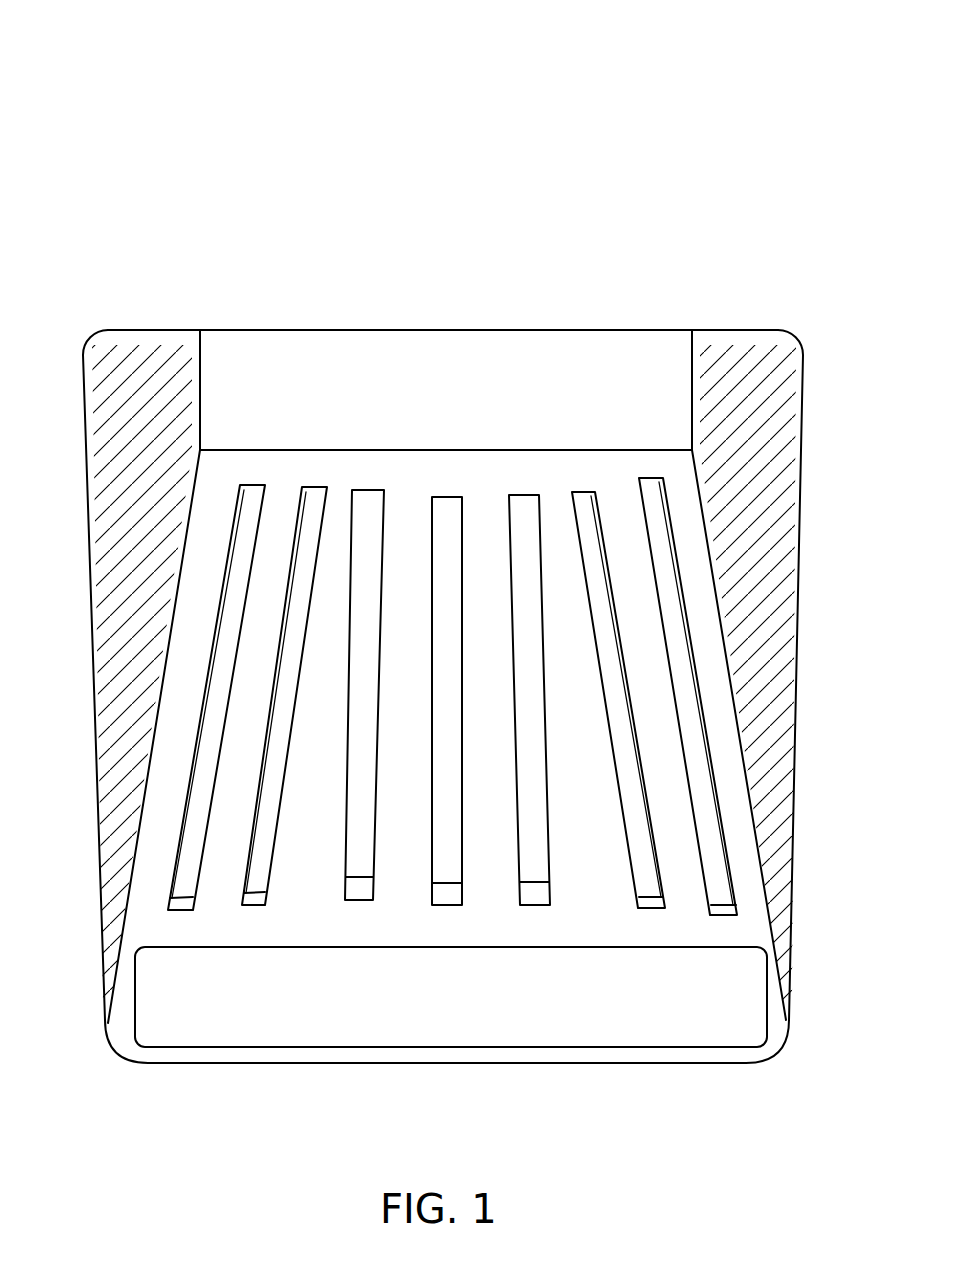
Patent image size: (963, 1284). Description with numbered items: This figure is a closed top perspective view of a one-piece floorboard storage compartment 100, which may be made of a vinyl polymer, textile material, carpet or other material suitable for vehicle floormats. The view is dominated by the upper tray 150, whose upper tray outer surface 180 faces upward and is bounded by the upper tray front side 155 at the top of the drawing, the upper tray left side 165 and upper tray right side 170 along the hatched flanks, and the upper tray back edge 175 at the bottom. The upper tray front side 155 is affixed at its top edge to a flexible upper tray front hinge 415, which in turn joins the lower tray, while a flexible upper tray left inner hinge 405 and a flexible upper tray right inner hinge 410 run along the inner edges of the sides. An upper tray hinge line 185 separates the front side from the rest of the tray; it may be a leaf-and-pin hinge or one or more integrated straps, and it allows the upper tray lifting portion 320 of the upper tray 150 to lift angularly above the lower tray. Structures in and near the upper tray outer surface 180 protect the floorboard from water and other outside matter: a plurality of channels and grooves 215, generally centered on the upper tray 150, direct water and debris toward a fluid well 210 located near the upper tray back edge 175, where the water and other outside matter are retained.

The one-piece floorboard storage compartment 100 is at (105, 50).
The flexible upper tray front hinge 415 is at (380, 328).
The upper tray right side 170 is at (751, 675).
The upper tray left side 165 is at (137, 682).
The upper tray back edge 175 is at (412, 1066).
The upper tray 150 is at (210, 505).
The upper tray front side 155 is at (563, 390).
The upper tray hinge line 185 is at (297, 450).
The flexible upper tray left inner hinge 405 is at (150, 735).
The flexible upper tray right inner hinge 410 is at (740, 726).
The upper tray outer surface 180 is at (452, 686).
The upper tray lifting portion 320 is at (500, 686).
The plurality of channels and grooves 215 is at (722, 907).
The fluid well 210 is at (451, 997).